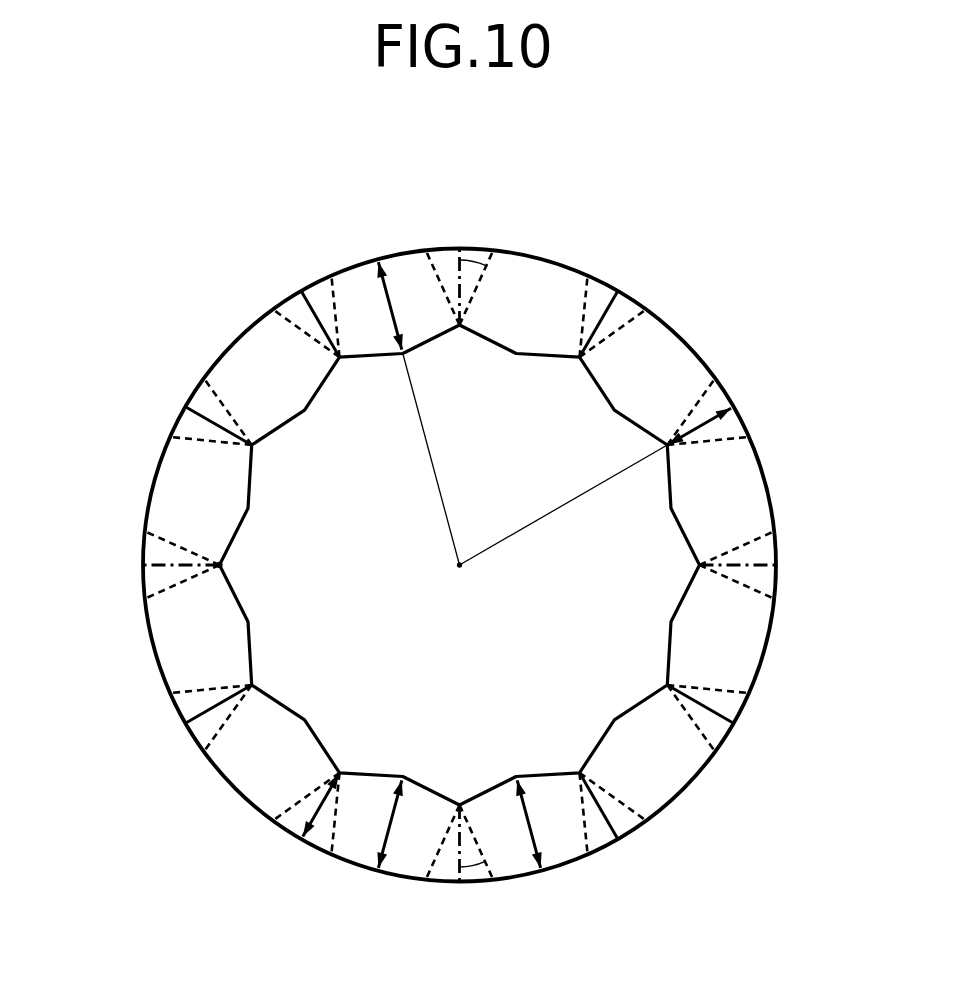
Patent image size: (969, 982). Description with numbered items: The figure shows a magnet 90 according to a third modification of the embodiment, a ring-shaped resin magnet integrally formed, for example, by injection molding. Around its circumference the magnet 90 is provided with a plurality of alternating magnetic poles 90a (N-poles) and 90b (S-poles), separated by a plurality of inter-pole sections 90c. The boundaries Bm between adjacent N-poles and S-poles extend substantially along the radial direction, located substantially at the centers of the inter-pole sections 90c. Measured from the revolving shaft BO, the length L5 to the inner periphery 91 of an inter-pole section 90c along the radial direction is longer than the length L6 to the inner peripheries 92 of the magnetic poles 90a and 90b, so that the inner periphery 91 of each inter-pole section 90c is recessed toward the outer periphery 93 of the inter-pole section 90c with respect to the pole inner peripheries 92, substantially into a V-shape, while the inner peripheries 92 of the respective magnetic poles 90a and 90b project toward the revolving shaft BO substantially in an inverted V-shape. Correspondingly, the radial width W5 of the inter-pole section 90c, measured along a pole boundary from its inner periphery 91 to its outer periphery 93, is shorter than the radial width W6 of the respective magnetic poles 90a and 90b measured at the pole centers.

The magnet 90 is at (458, 571).
The magnetic pole (N-pole) 90a is at (244, 357).
The magnetic pole (S-pole) 90b is at (159, 492).
The inter-pole section 90c is at (599, 293).
The inner periphery of the inter-pole section 91 is at (221, 564).
The inner periphery of the magnetic pole 92 is at (362, 357).
The outer periphery of the inter-pole section 93 is at (765, 474).
The boundary of the magnetic poles Bm is at (493, 250).
The radial width of the inter-pole section W5 is at (735, 418).
The radial width of the magnetic pole W6 is at (381, 291).
The length from the revolving shaft to the inner periphery of the inter-pole section L5 is at (662, 447).
The length from the revolving shaft to the inner peripheries of the magnetic poles L6 is at (403, 357).
The revolving shaft BO is at (470, 577).